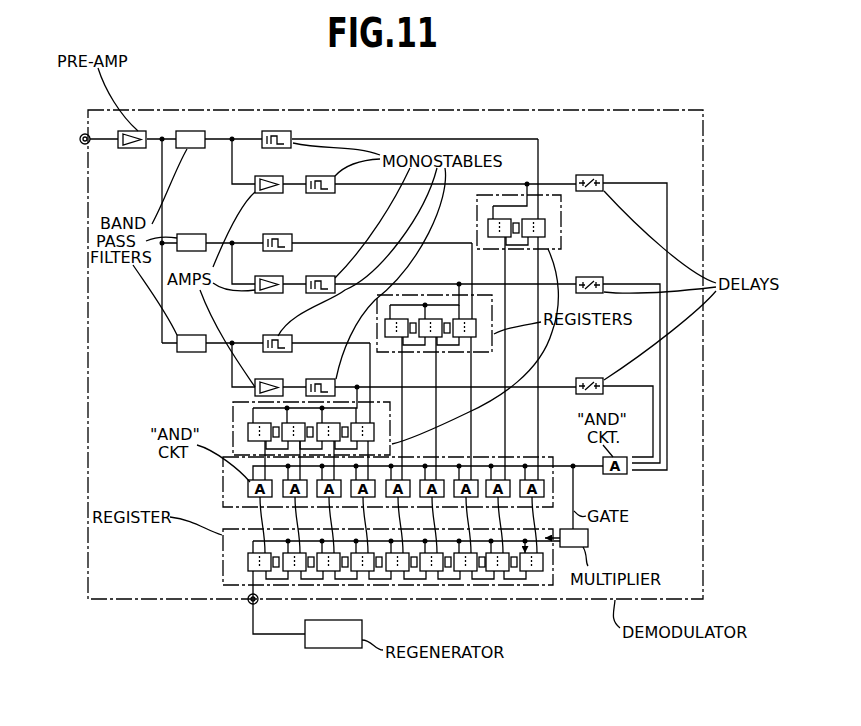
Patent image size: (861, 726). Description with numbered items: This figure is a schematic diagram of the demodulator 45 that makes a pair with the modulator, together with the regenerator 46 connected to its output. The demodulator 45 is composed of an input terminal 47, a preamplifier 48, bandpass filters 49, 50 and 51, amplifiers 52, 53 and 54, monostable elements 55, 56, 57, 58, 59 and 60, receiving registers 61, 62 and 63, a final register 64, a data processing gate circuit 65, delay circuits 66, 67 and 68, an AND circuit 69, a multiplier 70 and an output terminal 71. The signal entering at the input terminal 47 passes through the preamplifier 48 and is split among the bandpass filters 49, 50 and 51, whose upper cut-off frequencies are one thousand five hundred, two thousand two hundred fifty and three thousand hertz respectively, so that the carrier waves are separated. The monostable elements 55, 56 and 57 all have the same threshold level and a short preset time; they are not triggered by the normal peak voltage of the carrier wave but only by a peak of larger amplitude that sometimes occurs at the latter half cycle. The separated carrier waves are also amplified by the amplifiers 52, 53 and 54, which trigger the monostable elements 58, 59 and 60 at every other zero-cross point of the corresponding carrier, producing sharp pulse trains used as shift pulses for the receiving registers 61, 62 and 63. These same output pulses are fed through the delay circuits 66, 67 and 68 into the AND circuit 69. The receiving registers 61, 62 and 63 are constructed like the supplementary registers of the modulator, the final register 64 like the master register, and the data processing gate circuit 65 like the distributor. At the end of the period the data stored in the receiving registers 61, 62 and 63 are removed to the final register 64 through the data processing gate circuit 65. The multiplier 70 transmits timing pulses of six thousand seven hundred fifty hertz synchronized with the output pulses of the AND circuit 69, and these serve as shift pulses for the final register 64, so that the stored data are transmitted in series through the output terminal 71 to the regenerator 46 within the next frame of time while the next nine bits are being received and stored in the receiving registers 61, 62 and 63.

The demodulator 45 is at (742, 348).
The regenerator 46 is at (340, 648).
The input terminal 47 is at (86, 136).
The preamplifier 48 is at (137, 131).
The bandpass filter 49 is at (187, 131).
The bandpass filter 50 is at (188, 234).
The bandpass filter 51 is at (188, 335).
The amplifier 52 is at (266, 193).
The amplifier 53 is at (268, 293).
The amplifier 54 is at (266, 380).
The monostable element 55 is at (283, 131).
The monostable element 56 is at (292, 238).
The monostable element 57 is at (292, 340).
The monostable element 58 is at (324, 193).
The monostable element 59 is at (323, 277).
The monostable element 60 is at (317, 375).
The receiving register 61 is at (601, 240).
The receiving register 62 is at (535, 363).
The receiving register 63 is at (433, 423).
The final register 64 is at (222, 551).
The data processing gate circuit 65 is at (222, 483).
The delay circuit 66 is at (589, 175).
The delay circuit 67 is at (598, 278).
The delay circuit 68 is at (593, 378).
The AND circuit 69 is at (622, 474).
The multiplier 70 is at (590, 540).
The output terminal 71 is at (250, 606).